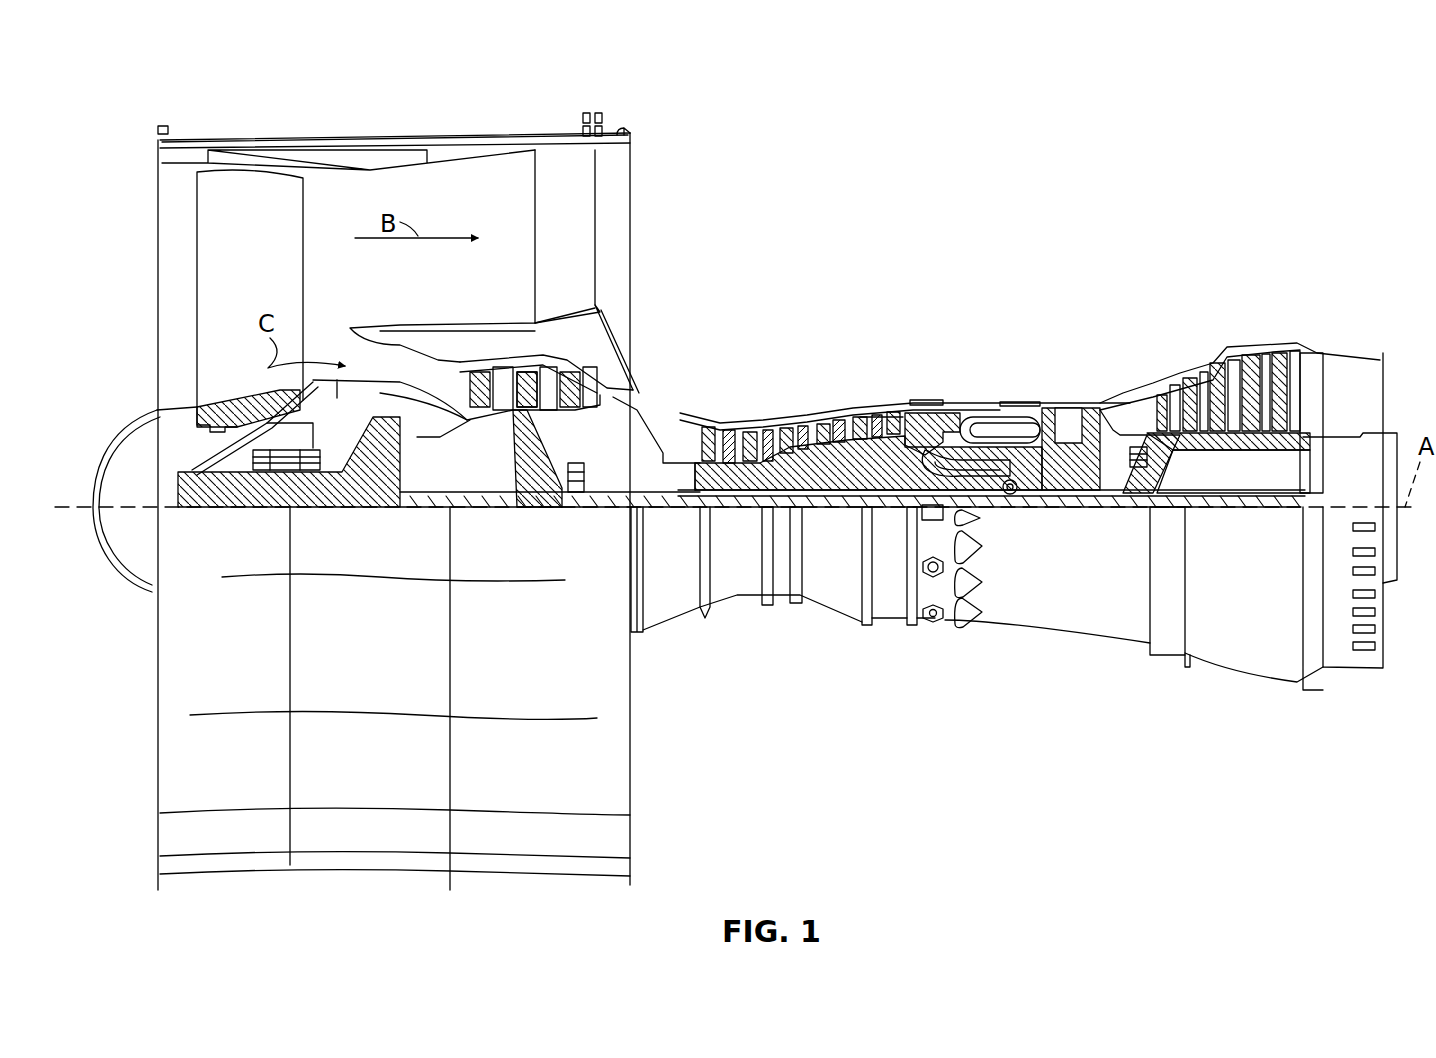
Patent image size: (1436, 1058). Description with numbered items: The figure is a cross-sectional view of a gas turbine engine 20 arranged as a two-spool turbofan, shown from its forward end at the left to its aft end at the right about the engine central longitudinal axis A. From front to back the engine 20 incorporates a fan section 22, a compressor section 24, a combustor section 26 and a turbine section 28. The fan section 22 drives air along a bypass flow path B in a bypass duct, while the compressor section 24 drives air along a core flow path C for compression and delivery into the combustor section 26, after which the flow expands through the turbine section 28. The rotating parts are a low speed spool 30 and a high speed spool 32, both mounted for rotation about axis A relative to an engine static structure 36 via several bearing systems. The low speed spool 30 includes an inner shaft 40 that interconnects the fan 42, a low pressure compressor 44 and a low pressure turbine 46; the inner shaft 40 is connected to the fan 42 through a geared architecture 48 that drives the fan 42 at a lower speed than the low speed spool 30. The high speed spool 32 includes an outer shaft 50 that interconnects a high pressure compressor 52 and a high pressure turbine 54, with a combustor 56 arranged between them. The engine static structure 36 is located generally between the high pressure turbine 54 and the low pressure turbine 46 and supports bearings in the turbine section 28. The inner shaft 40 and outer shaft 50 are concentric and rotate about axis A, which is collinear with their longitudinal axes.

The gas turbine engine 20 is at (1205, 178).
The fan section 22 is at (268, 132).
The compressor section 24 is at (822, 358).
The combustor section 26 is at (988, 358).
The turbine section 28 is at (1135, 350).
The low speed spool 30 is at (850, 510).
The high speed spool 32 is at (900, 453).
The engine static structure 36 is at (890, 625).
The inner shaft 40 is at (645, 500).
The fan 42 is at (277, 269).
The low pressure compressor 44 is at (547, 382).
The low pressure turbine 46 is at (1240, 363).
The geared architecture 48 is at (395, 470).
The outer shaft 50 is at (1010, 495).
The high pressure compressor 52 is at (812, 475).
The high pressure turbine 54 is at (1073, 405).
The combustor 56 is at (995, 427).